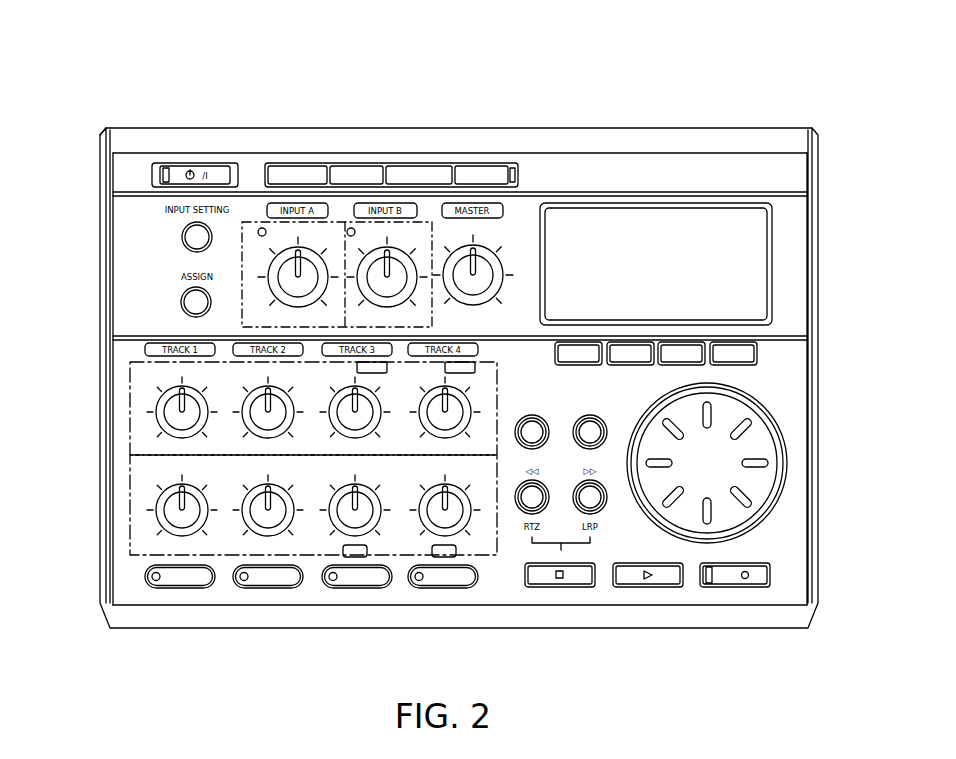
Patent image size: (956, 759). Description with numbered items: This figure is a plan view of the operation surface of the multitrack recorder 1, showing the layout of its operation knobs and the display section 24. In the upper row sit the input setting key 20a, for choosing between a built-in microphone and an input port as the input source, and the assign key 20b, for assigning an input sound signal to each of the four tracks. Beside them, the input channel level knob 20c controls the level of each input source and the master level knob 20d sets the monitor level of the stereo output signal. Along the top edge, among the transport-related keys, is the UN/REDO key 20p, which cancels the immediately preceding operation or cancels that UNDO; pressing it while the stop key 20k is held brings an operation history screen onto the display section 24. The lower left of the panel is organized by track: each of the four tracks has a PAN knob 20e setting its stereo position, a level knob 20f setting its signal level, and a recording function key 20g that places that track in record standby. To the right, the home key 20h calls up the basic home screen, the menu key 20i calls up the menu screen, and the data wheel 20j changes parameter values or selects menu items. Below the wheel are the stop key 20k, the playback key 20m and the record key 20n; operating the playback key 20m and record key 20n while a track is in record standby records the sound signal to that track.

The multitrack recorder 1 is at (748, 74).
The input setting key 20a is at (175, 234).
The assign key 20b is at (175, 302).
The input channel level knob 20c is at (255, 228).
The master level knob 20d is at (493, 260).
The UN/REDO key 20p is at (470, 160).
The PAN knob 20e is at (130, 407).
The level knob 20f is at (130, 510).
The recording function key 20g is at (145, 576).
The home key 20h is at (550, 422).
The menu key 20i is at (610, 432).
The data wheel 20j is at (768, 492).
The stop key 20k is at (577, 578).
The playback key 20m is at (665, 578).
The record key 20n is at (757, 578).
The display section 24 is at (670, 265).